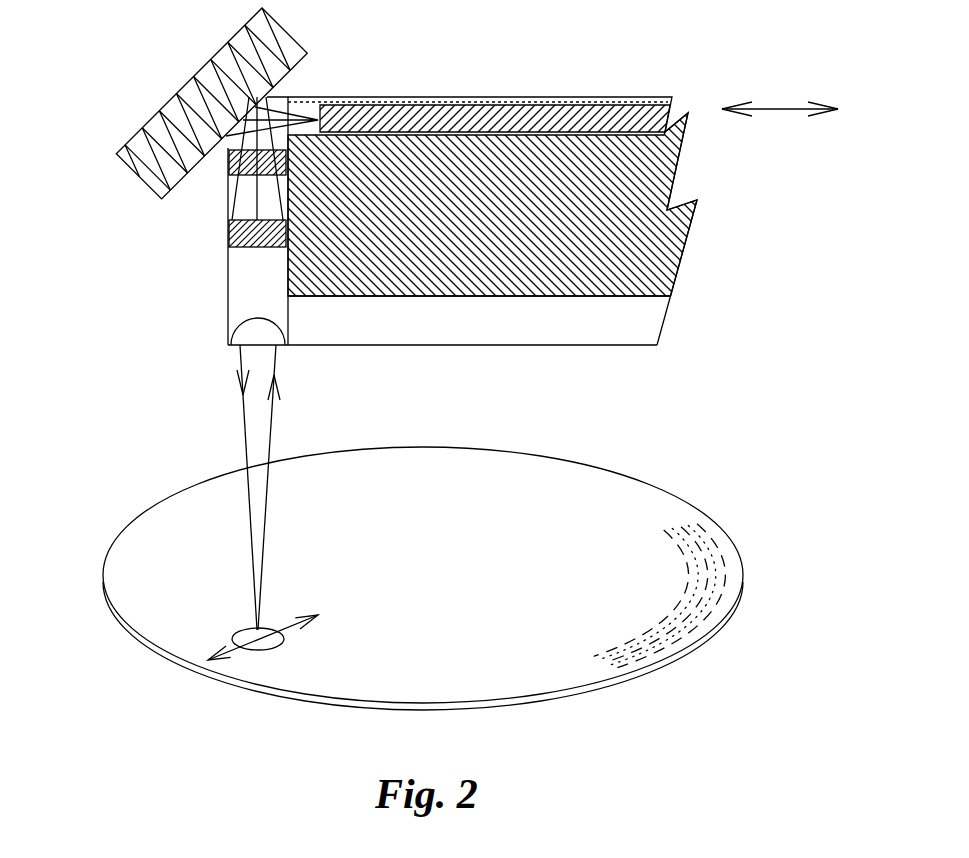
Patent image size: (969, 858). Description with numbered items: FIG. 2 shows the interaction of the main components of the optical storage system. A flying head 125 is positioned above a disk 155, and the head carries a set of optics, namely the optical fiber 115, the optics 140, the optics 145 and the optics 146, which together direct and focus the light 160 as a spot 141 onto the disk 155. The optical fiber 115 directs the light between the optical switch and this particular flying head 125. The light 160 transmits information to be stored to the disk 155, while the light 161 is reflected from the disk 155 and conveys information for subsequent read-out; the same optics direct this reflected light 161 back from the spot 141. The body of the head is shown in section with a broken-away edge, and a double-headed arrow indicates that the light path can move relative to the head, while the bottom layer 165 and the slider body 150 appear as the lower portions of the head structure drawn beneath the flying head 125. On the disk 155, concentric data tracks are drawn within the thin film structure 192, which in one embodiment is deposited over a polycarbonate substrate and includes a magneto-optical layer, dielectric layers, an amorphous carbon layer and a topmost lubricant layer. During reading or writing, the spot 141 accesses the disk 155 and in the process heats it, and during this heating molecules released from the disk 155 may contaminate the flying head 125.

The optics 140 is at (207, 63).
The optical fiber 115 is at (482, 105).
The flying head 125 is at (492, 204).
The slider / recording head 150 is at (683, 246).
The bottom layer 165 is at (567, 345).
The optics 145 is at (228, 232).
The optics 146 is at (243, 335).
The light 160 is at (243, 420).
The reflected light 161 is at (273, 408).
The disk 155 is at (515, 722).
The spot 141 is at (232, 632).
The thin film structure 192 is at (703, 572).